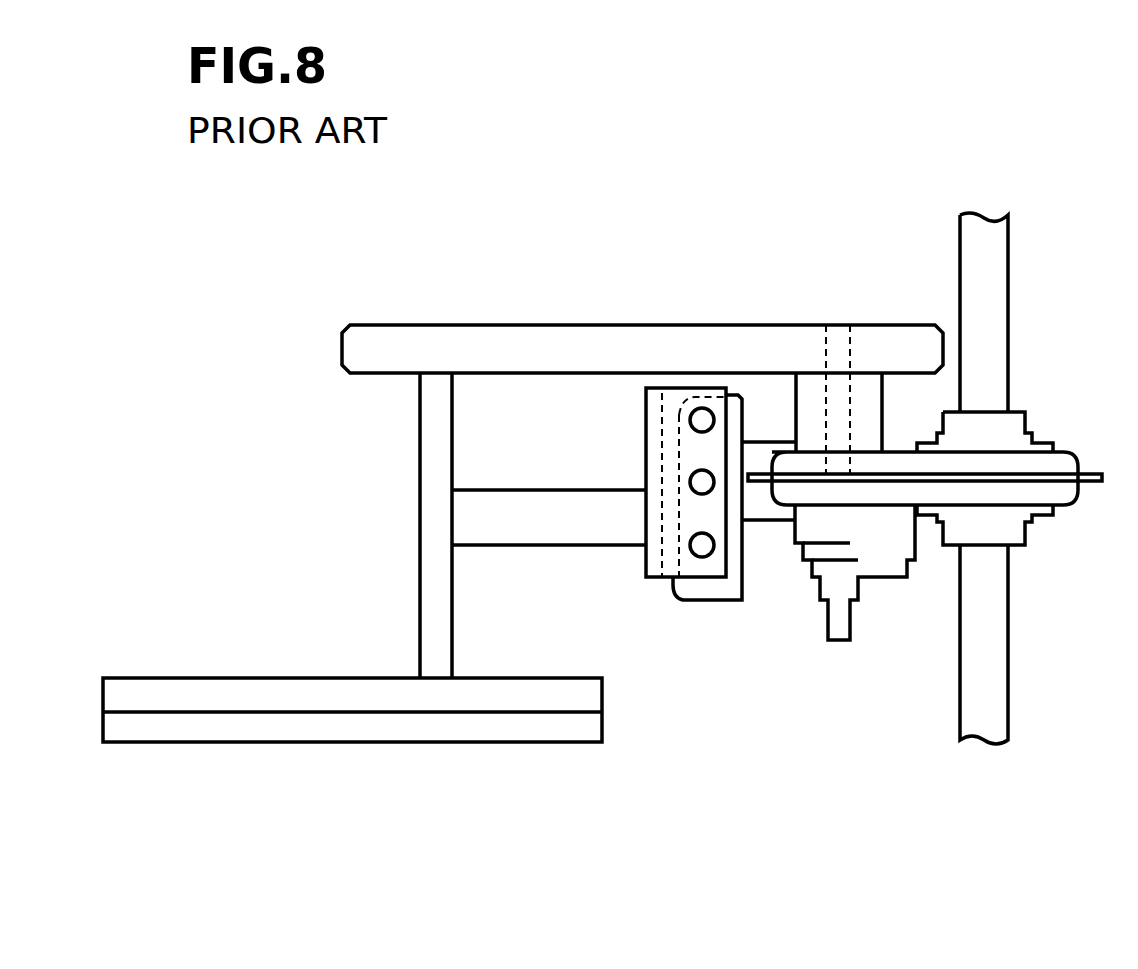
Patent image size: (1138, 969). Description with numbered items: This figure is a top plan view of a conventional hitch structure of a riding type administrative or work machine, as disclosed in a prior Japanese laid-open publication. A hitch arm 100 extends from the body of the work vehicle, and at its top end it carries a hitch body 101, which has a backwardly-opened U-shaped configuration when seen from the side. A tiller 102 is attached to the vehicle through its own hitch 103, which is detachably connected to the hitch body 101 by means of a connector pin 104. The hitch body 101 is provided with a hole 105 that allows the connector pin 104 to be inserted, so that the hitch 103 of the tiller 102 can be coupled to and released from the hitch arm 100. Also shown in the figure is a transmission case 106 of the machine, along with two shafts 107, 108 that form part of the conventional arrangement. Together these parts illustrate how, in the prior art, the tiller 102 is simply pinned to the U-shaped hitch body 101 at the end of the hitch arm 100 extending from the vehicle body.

The hitch arm 100 is at (507, 505).
The hitch body 101 is at (692, 588).
The tiller 102 is at (1030, 311).
The hitch 103 is at (729, 588).
The connector pin 104 is at (689, 482).
The hole 105 is at (695, 547).
The transmission case 106 is at (592, 326).
The shaft 107 is at (435, 600).
The shaft 108 is at (826, 410).